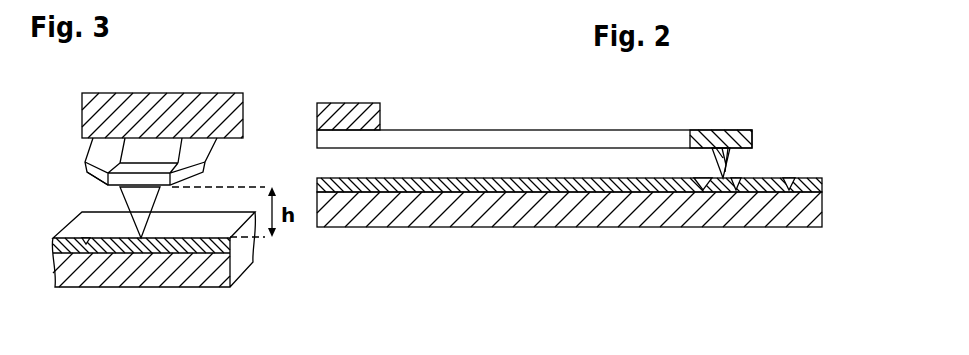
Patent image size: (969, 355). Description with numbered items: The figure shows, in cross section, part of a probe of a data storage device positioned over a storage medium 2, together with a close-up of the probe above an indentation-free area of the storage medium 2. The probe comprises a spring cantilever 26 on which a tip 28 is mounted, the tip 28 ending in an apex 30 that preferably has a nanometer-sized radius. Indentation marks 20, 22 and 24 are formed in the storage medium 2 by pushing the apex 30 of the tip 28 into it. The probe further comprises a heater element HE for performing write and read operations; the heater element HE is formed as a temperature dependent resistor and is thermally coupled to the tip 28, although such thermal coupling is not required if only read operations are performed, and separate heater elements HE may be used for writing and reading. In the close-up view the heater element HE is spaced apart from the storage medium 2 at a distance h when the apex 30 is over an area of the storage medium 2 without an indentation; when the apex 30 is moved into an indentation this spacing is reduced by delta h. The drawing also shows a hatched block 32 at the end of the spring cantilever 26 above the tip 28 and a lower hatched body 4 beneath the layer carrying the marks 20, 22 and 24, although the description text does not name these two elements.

In FIG. 2, the storage medium 2 is at (577, 195).
In FIG. 2, the substrate 4 is at (338, 230).
In FIG. 3, the mark 20 is at (86, 244).
In FIG. 2, the mark 20 is at (684, 194).
In FIG. 2, the mark 22 is at (748, 194).
In FIG. 2, the mark 24 is at (795, 178).
In FIG. 3, the spring cantilever 26 is at (82, 148).
In FIG. 2, the spring cantilever 26 is at (512, 130).
In FIG. 3, the tip 28 is at (150, 218).
In FIG. 2, the tip 28 is at (730, 163).
In FIG. 2, the apex 30 is at (733, 178).
In FIG. 2, the heater block 32 is at (715, 130).
In FIG. 3, the heater element HE is at (110, 170).